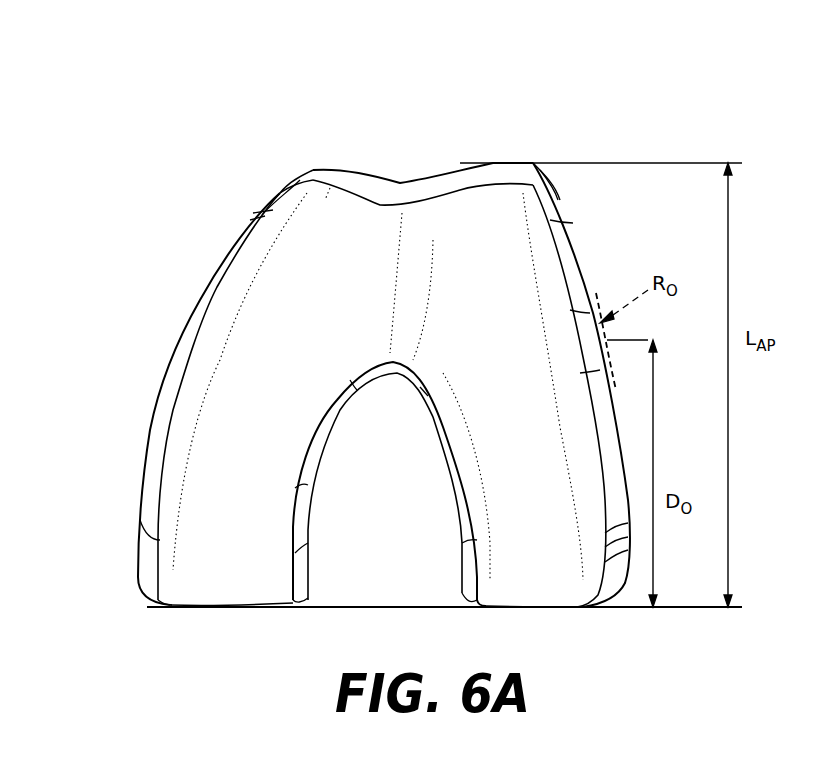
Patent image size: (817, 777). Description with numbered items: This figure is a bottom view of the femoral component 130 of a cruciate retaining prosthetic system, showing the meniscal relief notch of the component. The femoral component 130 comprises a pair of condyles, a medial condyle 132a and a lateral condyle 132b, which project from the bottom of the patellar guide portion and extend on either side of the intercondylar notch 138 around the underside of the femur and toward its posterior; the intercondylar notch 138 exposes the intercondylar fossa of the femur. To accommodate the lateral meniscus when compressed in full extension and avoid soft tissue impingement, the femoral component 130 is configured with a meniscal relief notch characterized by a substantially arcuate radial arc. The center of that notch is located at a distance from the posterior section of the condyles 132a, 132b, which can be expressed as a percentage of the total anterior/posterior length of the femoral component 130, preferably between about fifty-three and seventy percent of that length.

The femoral component 130 is at (194, 172).
The medial condyle 132a is at (203, 590).
The lateral condyle 132b is at (598, 562).
The intercondylar notch 138 is at (340, 590).